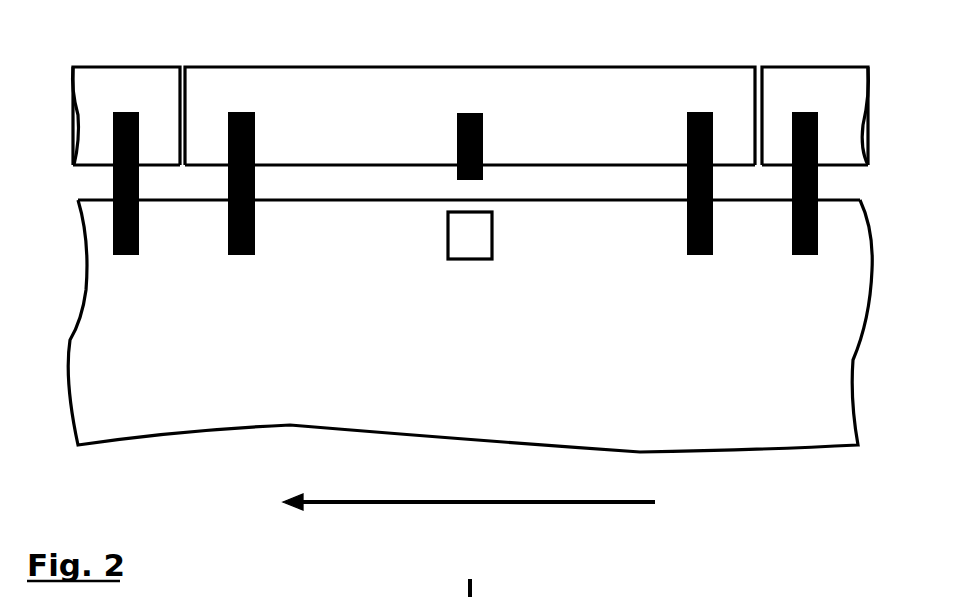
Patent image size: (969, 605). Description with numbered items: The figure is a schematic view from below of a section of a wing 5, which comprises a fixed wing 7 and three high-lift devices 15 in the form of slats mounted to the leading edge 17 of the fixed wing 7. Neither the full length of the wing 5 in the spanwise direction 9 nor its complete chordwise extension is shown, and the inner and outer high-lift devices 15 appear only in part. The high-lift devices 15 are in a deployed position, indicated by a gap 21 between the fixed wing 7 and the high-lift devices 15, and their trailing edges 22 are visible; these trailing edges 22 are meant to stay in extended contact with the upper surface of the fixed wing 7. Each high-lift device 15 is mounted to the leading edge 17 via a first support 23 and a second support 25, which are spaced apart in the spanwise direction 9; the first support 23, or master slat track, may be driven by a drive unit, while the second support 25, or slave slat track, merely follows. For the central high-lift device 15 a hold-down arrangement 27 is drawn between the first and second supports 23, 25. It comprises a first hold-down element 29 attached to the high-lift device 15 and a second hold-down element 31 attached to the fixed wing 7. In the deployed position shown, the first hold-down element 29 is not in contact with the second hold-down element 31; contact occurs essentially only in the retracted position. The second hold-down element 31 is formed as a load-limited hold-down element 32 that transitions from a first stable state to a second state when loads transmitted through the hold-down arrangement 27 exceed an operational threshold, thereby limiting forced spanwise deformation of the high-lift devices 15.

The wing 5 is at (107, 35).
The fixed wing 7 is at (790, 410).
The spanwise direction 9 is at (577, 505).
The high-lift device 15 is at (161, 103).
The leading edge 17 is at (66, 325).
The gap 21 is at (603, 192).
The trailing edge 22 is at (78, 168).
The first support 23 is at (240, 257).
The second support 25 is at (125, 257).
The hold-down arrangement 27 is at (381, 214).
The first hold-down element 29 is at (470, 112).
The second hold-down element 31 is at (535, 255).
The load-limited hold-down element 32 is at (494, 232).